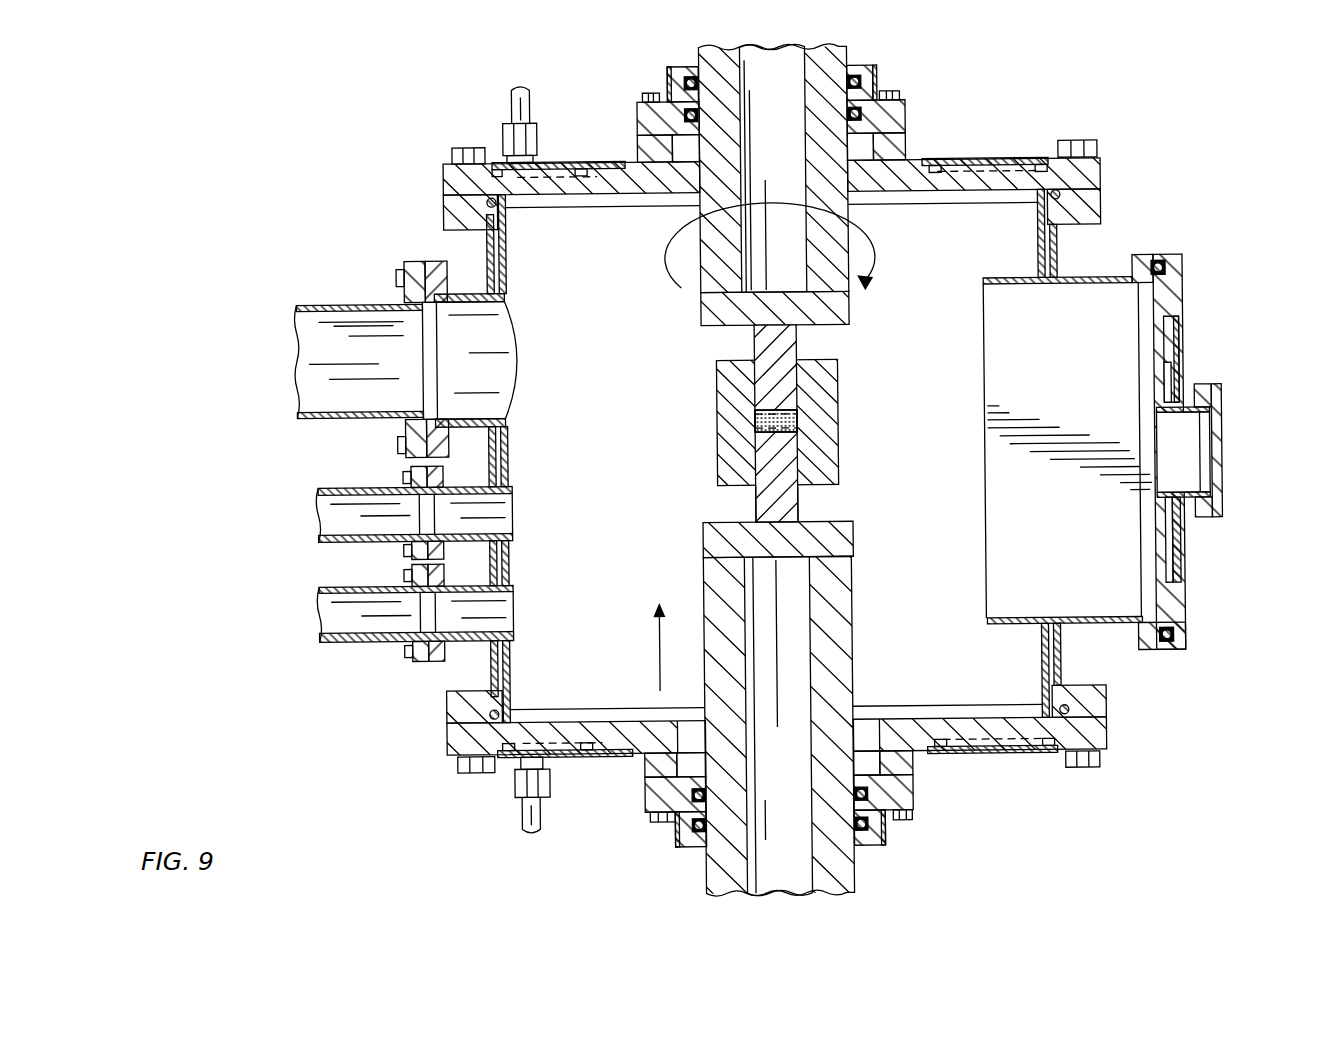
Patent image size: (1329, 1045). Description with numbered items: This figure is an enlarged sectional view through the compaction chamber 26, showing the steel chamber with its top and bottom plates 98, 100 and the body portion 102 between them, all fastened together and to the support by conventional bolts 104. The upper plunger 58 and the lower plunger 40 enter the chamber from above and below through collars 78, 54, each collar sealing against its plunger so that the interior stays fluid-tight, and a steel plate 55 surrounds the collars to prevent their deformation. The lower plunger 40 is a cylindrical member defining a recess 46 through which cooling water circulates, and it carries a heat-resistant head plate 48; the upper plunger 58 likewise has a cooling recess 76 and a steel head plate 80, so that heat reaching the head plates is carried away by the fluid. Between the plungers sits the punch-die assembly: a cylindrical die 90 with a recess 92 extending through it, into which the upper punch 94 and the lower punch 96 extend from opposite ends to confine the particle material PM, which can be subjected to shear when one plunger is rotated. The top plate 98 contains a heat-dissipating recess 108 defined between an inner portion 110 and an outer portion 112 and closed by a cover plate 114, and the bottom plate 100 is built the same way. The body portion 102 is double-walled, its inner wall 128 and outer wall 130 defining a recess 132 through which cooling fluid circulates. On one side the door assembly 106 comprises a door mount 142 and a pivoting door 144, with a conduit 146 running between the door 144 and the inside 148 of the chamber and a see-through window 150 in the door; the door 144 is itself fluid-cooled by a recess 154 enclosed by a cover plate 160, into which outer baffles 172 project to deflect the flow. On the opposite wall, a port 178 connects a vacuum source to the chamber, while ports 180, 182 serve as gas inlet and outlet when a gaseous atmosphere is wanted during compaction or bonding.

The compaction chamber 26 is at (744, 413).
The lower plunger 40 is at (781, 725).
The recess 46 is at (800, 672).
The head plate 48 is at (848, 527).
The collar 54 is at (874, 852).
The steel plate 55 is at (879, 92).
The upper plunger 58 is at (878, 74).
The recess 76 is at (785, 62).
The collar 78 is at (695, 62).
The head plate 80 is at (852, 312).
The die 90 is at (840, 385).
The recess 92 is at (755, 425).
The upper punch 94 is at (755, 344).
The lower punch 96 is at (755, 503).
The top plate 98 is at (1106, 170).
The bottom plate 100 is at (1104, 735).
The body portion 102 is at (1155, 417).
The bolts 104 is at (473, 140).
The door assembly 106 is at (1226, 417).
The recess 108 is at (582, 158).
The inner portion 110 is at (632, 158).
The outer portion 112 is at (492, 157).
The cover plate 114 is at (562, 158).
The inner wall 128 is at (508, 281).
The outer wall 130 is at (492, 246).
The recess 132 is at (508, 242).
The door mount 142 is at (1146, 257).
The door 144 is at (1187, 616).
The conduit 146 is at (1105, 280).
The inside 148 is at (1028, 668).
The see-through window 150 is at (1224, 464).
The recess 154 is at (1172, 385).
The cover plate 160 is at (1186, 349).
The outer baffles 172 is at (1180, 334).
The port 178 is at (360, 430).
The port 180 is at (343, 545).
The port 182 is at (360, 654).
The particle material PM is at (798, 425).